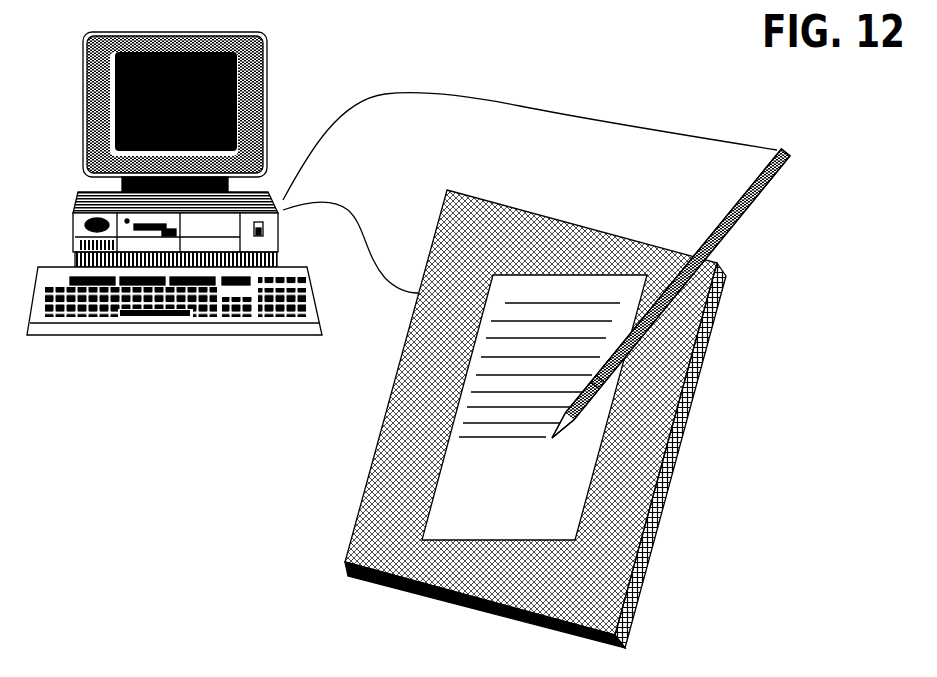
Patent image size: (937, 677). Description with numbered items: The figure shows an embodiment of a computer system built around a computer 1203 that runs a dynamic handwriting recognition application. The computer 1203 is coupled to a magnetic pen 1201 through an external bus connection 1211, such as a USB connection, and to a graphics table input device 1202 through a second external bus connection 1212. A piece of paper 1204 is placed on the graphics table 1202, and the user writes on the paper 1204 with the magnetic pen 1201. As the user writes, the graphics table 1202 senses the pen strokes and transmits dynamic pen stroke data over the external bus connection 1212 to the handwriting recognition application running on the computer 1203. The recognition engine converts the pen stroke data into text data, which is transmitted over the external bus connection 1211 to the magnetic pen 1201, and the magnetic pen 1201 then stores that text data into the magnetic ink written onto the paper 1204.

The computer 1203 is at (80, 97).
The external bus connection 1211 is at (568, 92).
The external bus connection 1212 is at (363, 207).
The magnetic pen 1201 is at (762, 202).
The graphics table input device 1202 is at (356, 501).
The paper 1204 is at (597, 453).